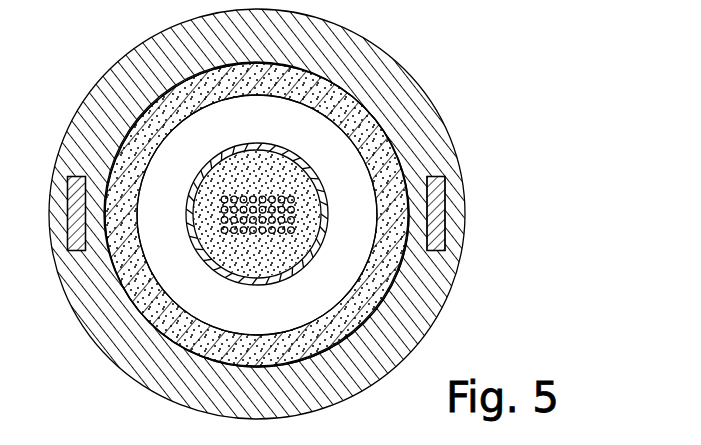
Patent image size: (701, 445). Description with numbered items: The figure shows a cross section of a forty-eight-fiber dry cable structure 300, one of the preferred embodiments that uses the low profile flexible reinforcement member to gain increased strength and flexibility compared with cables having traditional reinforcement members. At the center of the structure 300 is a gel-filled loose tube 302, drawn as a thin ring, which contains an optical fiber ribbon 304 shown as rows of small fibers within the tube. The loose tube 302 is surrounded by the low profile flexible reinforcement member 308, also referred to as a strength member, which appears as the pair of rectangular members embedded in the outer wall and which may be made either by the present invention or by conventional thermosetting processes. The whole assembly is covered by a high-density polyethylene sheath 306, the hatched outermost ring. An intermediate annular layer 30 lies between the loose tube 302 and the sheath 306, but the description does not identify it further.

The dry cable structure 300 is at (283, 214).
The intermediate layer 30 is at (355, 99).
The gel-filled loose tube 302 is at (262, 144).
The optical fiber ribbon 304 is at (243, 196).
The high-density polyethylene sheath 306 is at (452, 146).
The low profile flexible reinforcement member 308 is at (445, 215).